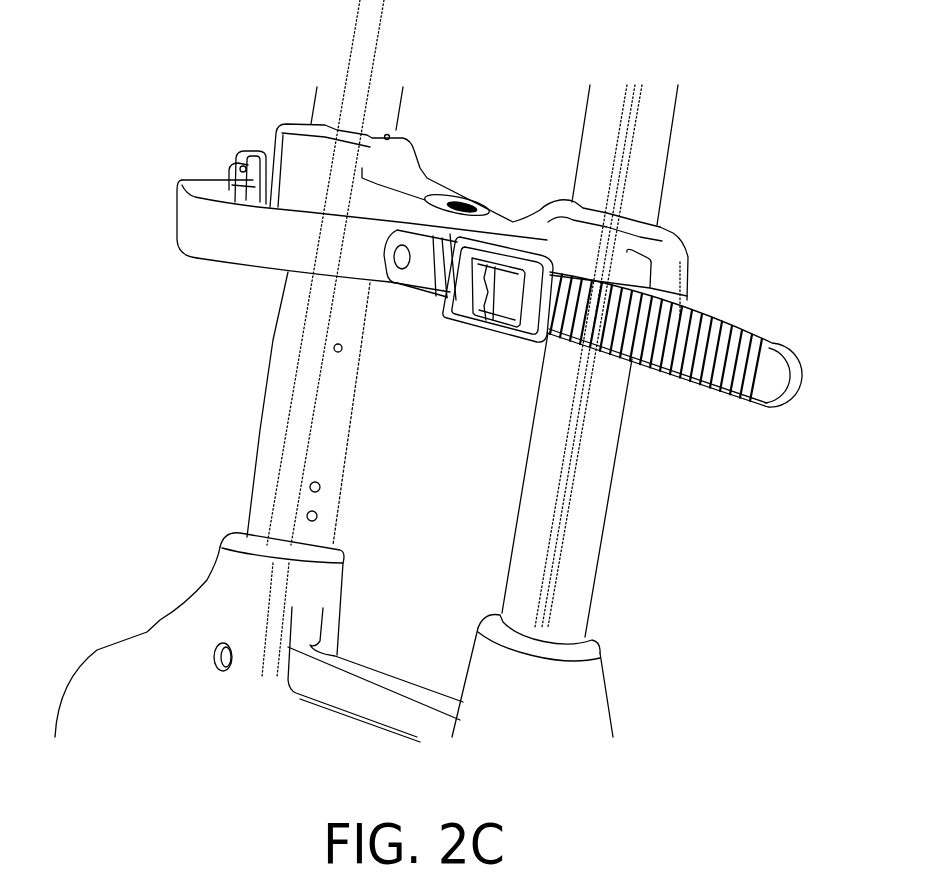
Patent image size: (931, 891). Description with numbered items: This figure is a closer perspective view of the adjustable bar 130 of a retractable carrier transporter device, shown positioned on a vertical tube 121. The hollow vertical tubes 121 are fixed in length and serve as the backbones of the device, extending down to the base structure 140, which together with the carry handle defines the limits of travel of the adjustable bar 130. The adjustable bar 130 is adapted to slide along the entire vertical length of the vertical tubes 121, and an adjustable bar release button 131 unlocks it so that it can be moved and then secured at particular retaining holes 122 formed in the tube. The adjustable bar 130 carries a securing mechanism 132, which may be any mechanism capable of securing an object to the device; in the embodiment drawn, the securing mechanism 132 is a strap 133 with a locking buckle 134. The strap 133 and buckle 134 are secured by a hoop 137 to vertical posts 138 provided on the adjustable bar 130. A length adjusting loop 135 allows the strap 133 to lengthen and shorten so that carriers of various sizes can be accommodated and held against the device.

The vertical tubes 121 is at (266, 387).
The retaining holes 122 is at (342, 352).
The adjustable bar 130 is at (282, 125).
The adjustable bar release button 131 is at (495, 215).
The securing mechanism 132 is at (178, 240).
The strap 133 is at (673, 362).
The locking buckle 134 is at (513, 338).
The length adjusting loop 135 is at (235, 173).
The hoop 137 is at (697, 297).
The vertical posts 138 is at (676, 262).
The base structure 140 is at (145, 630).